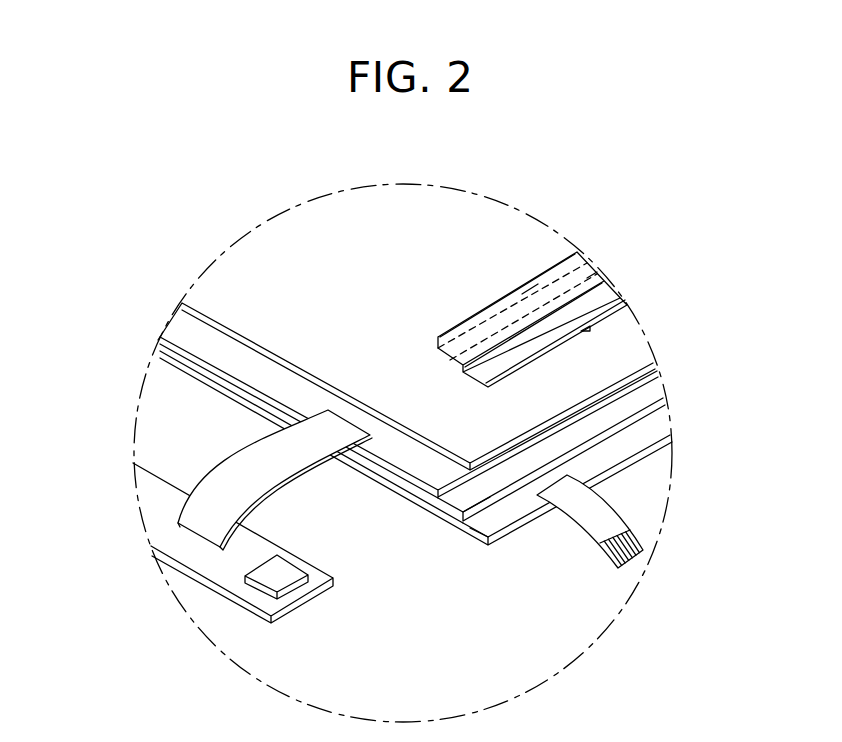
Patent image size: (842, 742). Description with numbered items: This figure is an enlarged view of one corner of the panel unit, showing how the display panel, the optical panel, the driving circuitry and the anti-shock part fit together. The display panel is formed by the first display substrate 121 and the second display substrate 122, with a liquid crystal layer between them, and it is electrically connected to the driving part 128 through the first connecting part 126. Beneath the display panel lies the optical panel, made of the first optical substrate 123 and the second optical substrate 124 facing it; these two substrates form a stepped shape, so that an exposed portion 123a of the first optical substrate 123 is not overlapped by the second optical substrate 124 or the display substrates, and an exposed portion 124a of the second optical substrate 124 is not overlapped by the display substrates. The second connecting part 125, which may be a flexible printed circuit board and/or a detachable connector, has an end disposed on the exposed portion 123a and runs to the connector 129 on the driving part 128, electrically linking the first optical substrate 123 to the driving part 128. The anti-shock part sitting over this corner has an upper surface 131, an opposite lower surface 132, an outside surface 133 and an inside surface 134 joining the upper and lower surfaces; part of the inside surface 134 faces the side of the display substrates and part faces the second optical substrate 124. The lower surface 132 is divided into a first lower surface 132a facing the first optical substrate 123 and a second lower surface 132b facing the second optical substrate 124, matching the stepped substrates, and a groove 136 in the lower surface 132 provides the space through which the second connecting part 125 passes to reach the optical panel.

The first display substrate 121 is at (158, 337).
The second display substrate 122 is at (182, 303).
The first optical substrate 123 is at (158, 349).
The exposed portion of the first optical substrate 123a is at (485, 523).
The second optical substrate 124 is at (160, 341).
The exposed portion of the second optical substrate 124a is at (480, 490).
The second connecting part 125 is at (603, 507).
The first connecting part 126 is at (237, 460).
The driving part 128 is at (152, 508).
The connector 129 is at (283, 577).
The upper surface 131 is at (587, 278).
The lower surface 132 is at (460, 319).
The first lower surface 132a is at (460, 384).
The second lower surface 132b is at (446, 353).
The outside surface 133 is at (520, 372).
The inside surface 134 is at (532, 289).
The groove 136 is at (566, 343).